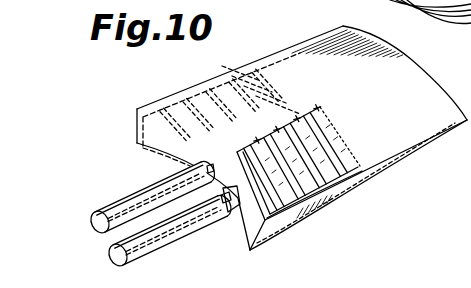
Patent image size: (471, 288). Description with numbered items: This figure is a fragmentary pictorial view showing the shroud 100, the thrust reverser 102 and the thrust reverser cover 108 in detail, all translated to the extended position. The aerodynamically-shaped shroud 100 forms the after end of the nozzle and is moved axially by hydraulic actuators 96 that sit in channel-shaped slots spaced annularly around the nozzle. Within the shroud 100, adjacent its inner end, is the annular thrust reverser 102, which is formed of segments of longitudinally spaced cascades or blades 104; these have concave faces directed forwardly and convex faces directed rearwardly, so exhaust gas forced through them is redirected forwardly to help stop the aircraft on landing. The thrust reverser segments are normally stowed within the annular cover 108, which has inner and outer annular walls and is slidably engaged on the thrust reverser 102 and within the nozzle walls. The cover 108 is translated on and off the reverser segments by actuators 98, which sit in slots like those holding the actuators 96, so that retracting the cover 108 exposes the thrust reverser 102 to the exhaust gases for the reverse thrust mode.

The hydraulic actuator 96 is at (134, 198).
The actuator 98 is at (171, 240).
The shroud 100 is at (395, 162).
The thrust reverser 102 is at (259, 64).
The cascades or blades 104 is at (198, 80).
The annular cover 108 is at (283, 221).